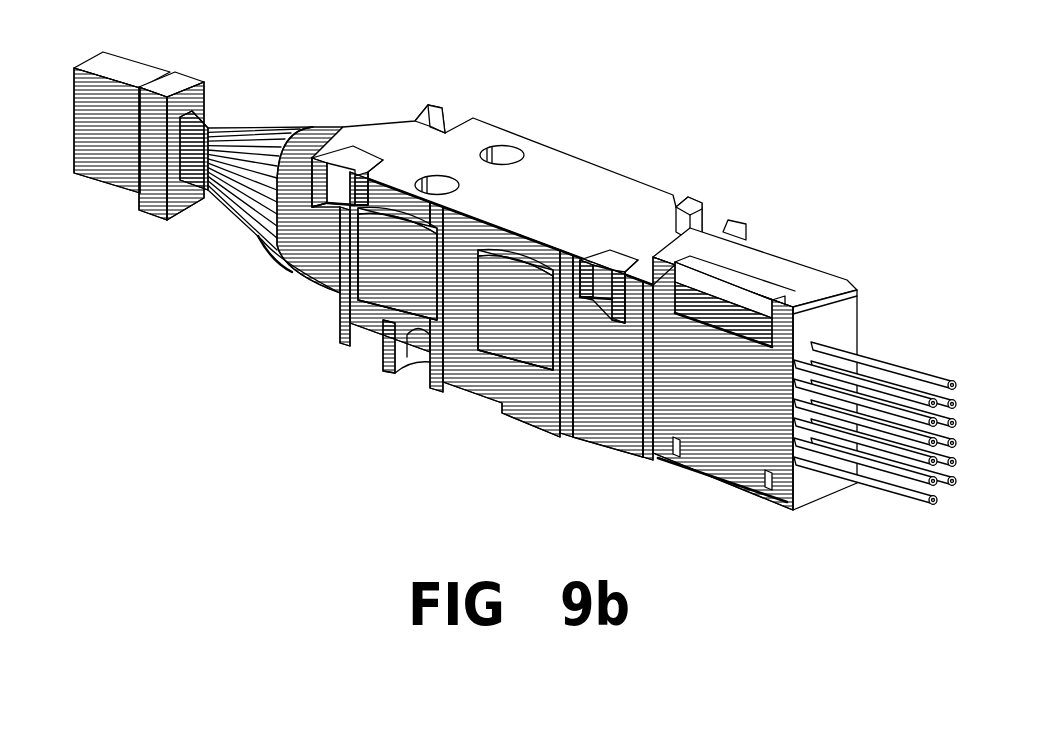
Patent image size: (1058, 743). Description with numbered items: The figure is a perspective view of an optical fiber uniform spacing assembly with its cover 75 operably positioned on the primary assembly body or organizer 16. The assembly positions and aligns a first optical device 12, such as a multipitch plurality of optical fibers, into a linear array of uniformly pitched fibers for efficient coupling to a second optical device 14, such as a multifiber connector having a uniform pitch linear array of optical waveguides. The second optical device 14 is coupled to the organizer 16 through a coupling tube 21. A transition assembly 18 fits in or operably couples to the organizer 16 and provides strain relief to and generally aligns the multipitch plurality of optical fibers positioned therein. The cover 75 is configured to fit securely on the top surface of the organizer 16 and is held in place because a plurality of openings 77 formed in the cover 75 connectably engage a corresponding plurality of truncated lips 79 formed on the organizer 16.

The first optical device 12 is at (884, 383).
The second optical device 14 is at (148, 66).
The primary assembly body or organizer 16 is at (515, 416).
The transition assembly 18 is at (693, 480).
The coupling tube 21 is at (262, 240).
The cover 75 is at (540, 147).
The openings 77 is at (367, 158).
The truncated lips 79 is at (345, 192).